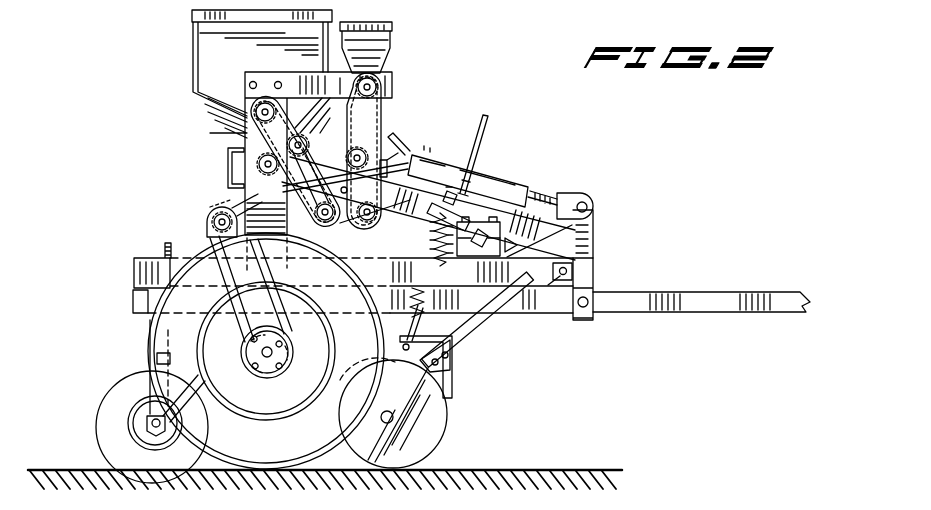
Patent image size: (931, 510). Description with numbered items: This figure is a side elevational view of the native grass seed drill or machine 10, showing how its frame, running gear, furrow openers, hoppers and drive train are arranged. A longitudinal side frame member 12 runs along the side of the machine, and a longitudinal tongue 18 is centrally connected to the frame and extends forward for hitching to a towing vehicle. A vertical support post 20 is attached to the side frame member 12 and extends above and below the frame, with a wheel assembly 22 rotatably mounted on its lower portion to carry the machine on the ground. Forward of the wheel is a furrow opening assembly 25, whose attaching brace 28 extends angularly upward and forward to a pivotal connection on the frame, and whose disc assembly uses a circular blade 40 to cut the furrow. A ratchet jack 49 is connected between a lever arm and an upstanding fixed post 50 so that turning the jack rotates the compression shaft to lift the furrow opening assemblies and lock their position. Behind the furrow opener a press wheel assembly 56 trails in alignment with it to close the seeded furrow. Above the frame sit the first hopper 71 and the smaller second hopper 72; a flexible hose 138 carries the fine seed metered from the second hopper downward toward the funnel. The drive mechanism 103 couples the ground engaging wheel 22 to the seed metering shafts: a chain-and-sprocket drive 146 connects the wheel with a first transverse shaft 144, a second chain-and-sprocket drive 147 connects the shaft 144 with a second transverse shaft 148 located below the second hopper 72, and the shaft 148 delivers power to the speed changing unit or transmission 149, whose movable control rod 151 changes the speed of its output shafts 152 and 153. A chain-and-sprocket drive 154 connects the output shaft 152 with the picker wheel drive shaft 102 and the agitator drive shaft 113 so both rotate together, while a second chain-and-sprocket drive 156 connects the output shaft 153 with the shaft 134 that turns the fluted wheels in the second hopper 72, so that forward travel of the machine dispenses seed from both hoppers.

The native grass seed drill or machine 10 is at (420, 85).
The longitudinal side frame member 12 is at (523, 275).
The longitudinal tongue 18 is at (748, 293).
The vertical support post 20 is at (243, 193).
The wheel assembly 22 is at (296, 448).
The furrow opening assembly 25 is at (466, 380).
The attaching brace 28 is at (483, 335).
The circular blade 40 is at (436, 436).
The ratchet jack 49 is at (495, 150).
The upstanding fixed post 50 is at (594, 232).
The press wheel assembly 56 is at (113, 398).
The first hopper 71 is at (185, 50).
The second hopper 72 is at (402, 37).
The drive shaft 102 is at (258, 164).
The drive mechanism 103 is at (205, 137).
The drive shaft 113 is at (247, 101).
The shaft 134 is at (377, 82).
The flexible hose 138 is at (375, 120).
The first transverse shaft 144 is at (213, 224).
The chain-and-sprocket drive 146 is at (212, 212).
The second chain-and-sprocket drive 147 is at (318, 226).
The second transverse shaft 148 is at (342, 228).
The speed changing unit or transmission 149 is at (462, 168).
The movable control rod 151 is at (410, 148).
The output shaft 152 is at (323, 222).
The output shaft 153 is at (368, 220).
The chain-and-sprocket drive 154 is at (247, 133).
The second chain-and-sprocket drive 156 is at (372, 118).